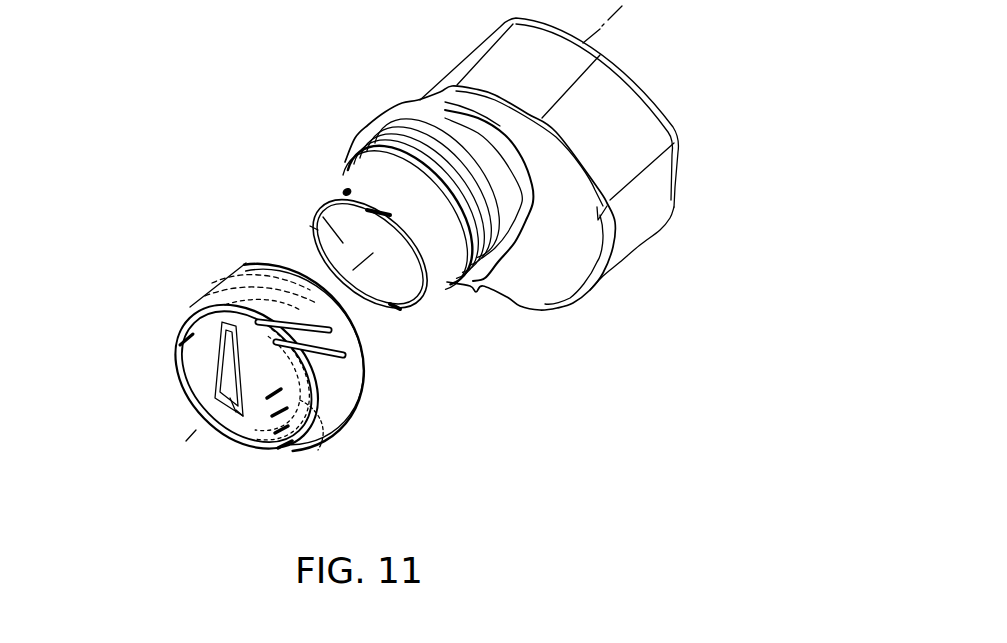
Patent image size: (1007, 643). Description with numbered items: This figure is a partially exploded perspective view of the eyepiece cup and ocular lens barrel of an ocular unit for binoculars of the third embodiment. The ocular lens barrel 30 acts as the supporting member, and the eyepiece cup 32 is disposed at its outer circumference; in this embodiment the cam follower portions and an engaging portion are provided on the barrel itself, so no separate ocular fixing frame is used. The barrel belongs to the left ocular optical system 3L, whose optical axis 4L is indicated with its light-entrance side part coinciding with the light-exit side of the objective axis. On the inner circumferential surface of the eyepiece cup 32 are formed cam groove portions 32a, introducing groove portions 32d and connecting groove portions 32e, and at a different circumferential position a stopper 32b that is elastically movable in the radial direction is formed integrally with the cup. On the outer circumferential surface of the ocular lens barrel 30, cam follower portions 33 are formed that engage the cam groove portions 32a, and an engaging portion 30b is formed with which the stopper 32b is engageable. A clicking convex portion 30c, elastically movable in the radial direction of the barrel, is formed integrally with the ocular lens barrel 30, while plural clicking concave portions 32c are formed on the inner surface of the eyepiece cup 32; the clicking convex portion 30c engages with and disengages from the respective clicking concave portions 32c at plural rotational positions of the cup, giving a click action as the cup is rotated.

The ocular lens barrel 30 is at (448, 243).
The engaging portion 30b is at (445, 284).
The clicking convex portion 30c is at (398, 305).
The cam follower portion 33 is at (347, 188).
The left ocular optical system 3L is at (313, 227).
The optical axis of left ocular optical system 4L is at (201, 425).
The eyepiece cup 32 is at (328, 370).
The cam groove portion 32a is at (216, 340).
The stopper 32b is at (277, 322).
The clicking concave portion 32c is at (283, 447).
The introducing groove portion 32d is at (233, 333).
The connecting groove portion 32e is at (243, 415).